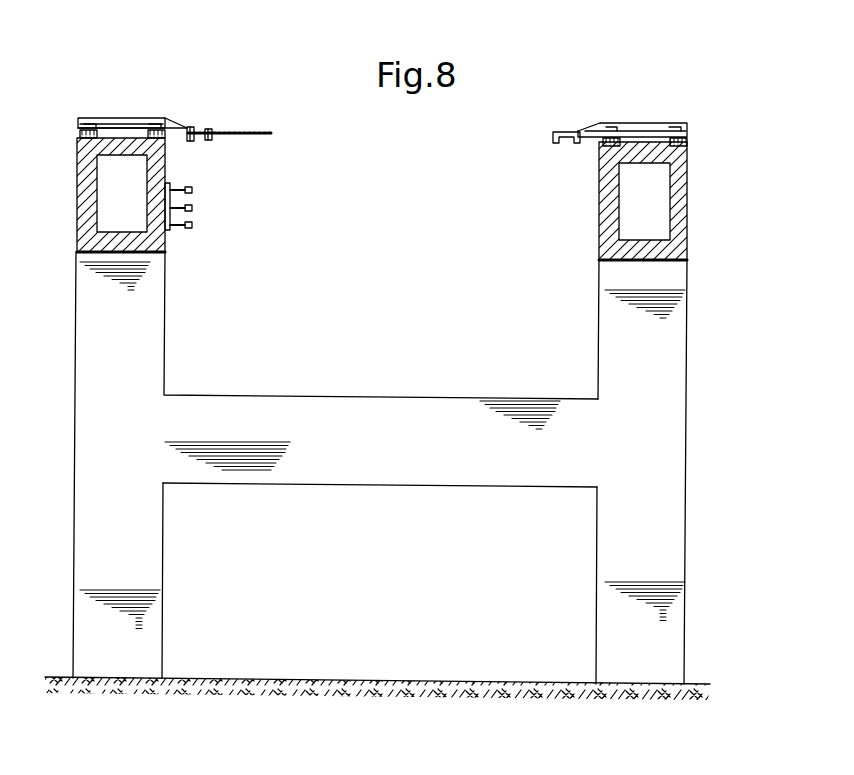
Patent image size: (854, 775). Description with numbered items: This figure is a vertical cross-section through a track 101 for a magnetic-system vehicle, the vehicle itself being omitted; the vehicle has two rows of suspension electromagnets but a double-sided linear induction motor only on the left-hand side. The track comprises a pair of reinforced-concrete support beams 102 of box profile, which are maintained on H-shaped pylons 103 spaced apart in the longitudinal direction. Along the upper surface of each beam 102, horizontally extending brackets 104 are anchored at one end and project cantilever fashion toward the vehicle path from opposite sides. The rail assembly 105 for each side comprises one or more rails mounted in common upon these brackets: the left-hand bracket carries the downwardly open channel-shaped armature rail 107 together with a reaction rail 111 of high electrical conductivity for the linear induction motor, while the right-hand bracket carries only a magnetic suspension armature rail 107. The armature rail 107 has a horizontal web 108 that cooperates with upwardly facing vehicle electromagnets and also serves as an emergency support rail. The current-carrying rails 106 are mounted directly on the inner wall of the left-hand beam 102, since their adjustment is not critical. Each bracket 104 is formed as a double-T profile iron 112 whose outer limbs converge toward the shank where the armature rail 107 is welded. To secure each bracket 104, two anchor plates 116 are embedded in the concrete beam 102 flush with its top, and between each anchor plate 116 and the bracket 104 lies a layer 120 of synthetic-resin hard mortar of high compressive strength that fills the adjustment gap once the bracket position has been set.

The track 101 is at (74, 314).
The support beam 102 is at (77, 210).
The pylon 103 is at (685, 460).
The bracket 104 is at (105, 116).
The rail assembly 105 is at (233, 103).
The current-carrying rail 106 is at (193, 190).
The armature rail 107 is at (191, 126).
The web 108 is at (210, 142).
The reaction rail 111 is at (265, 131).
The double-T profile iron 112 is at (136, 124).
The anchor plate 116 is at (86, 135).
The mortar layer 120 is at (82, 130).